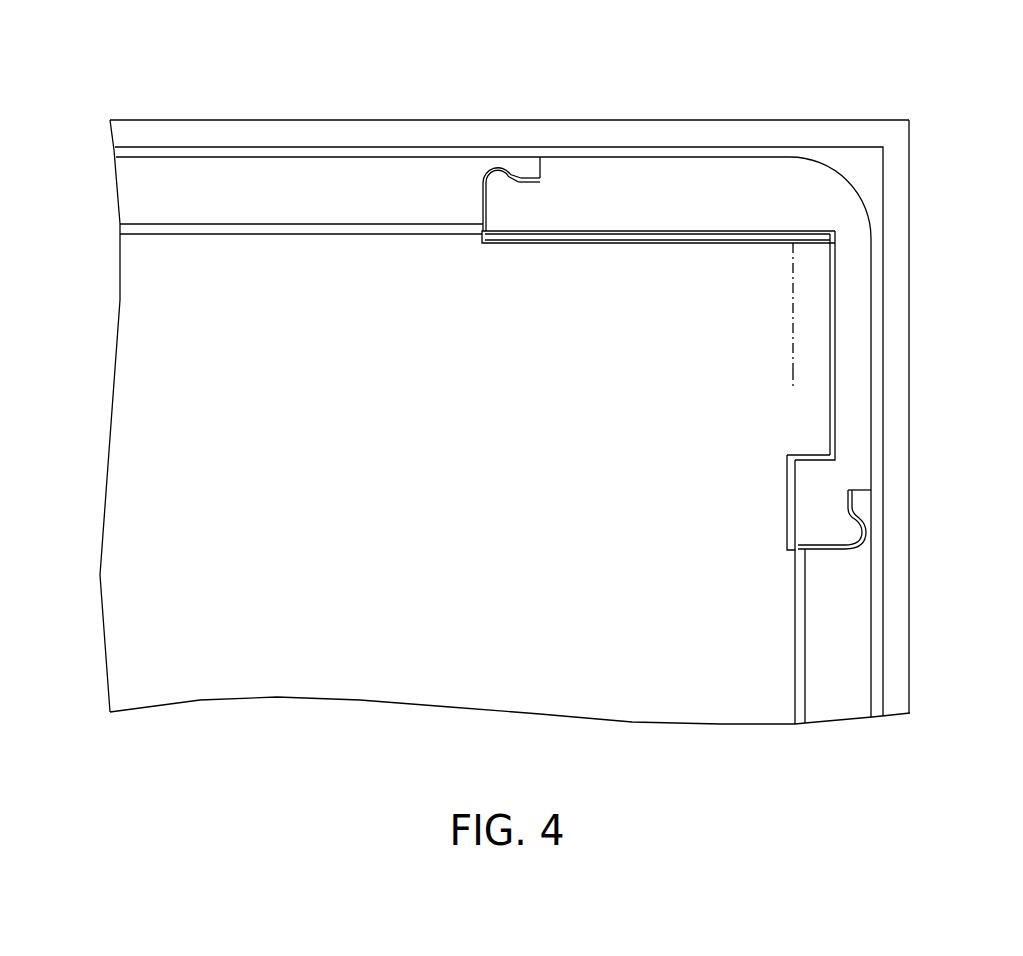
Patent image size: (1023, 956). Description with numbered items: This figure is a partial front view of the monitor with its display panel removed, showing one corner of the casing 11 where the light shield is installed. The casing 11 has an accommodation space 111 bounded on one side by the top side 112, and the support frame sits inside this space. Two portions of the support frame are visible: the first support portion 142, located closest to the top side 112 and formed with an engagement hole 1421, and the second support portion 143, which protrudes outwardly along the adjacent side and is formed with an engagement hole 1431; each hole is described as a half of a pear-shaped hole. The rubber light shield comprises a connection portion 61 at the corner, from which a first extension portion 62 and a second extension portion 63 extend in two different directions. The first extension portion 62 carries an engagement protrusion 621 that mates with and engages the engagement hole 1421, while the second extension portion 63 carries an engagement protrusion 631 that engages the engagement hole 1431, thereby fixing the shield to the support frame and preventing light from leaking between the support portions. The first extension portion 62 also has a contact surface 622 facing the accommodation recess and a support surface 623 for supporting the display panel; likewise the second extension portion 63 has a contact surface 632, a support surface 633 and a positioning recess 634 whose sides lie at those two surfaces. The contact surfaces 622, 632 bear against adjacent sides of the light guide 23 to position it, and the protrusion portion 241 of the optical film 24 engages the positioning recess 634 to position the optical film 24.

The casing 11 is at (893, 133).
The accommodation space 111 is at (858, 172).
The top side 112 is at (658, 119).
The first support portion 142 is at (290, 188).
The engagement hole 1421 is at (495, 168).
The second support portion 143 is at (837, 647).
The engagement hole 1431 is at (865, 538).
The light guide 23 is at (793, 388).
The optical film 24 is at (627, 665).
The protrusion portion 241 is at (810, 287).
The connection portion 61 is at (839, 210).
The first extension portion 62 is at (703, 187).
The engagement protrusion 621 is at (502, 202).
The contact surface 622 is at (553, 238).
The support surface 623 is at (620, 190).
The second extension portion 63 is at (850, 357).
The engagement protrusion 631 is at (820, 527).
The contact surface 632 is at (793, 512).
The support surface 633 is at (850, 307).
The positioning recess 634 is at (832, 432).